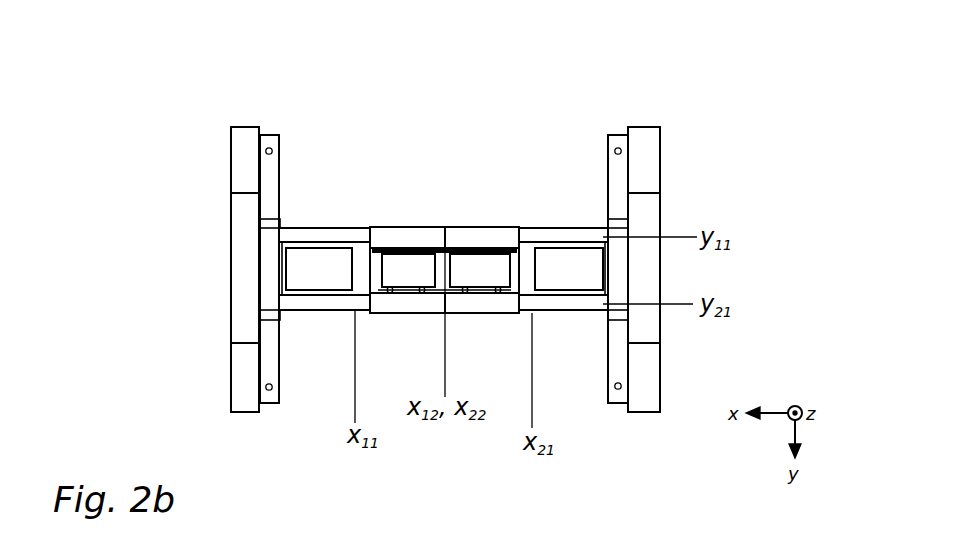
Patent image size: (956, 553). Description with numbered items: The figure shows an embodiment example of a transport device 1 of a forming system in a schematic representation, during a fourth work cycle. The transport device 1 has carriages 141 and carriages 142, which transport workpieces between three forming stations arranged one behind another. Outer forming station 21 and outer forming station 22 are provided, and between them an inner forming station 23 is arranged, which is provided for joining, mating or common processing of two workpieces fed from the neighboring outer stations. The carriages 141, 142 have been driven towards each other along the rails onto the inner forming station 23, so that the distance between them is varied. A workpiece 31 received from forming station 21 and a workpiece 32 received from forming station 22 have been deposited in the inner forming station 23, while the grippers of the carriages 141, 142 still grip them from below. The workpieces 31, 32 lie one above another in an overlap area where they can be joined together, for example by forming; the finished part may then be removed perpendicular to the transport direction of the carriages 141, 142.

The transport device 1 is at (553, 98).
The outer forming station 21 is at (318, 268).
The outer forming station 22 is at (580, 268).
The inner forming station 23 is at (520, 237).
The workpiece 31 is at (408, 270).
The workpiece 32 is at (480, 270).
The carriages 141 is at (392, 233).
The carriages 142 is at (495, 235).